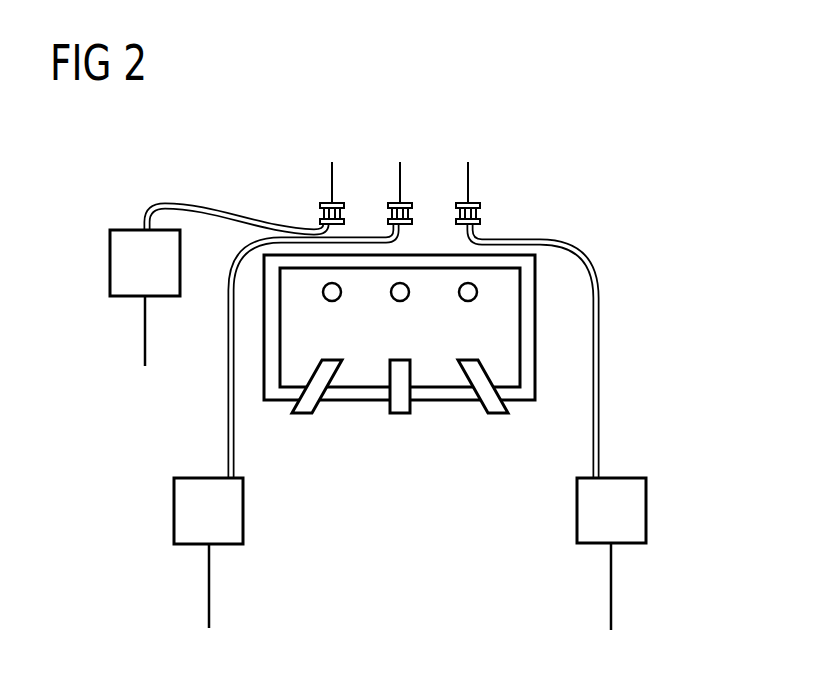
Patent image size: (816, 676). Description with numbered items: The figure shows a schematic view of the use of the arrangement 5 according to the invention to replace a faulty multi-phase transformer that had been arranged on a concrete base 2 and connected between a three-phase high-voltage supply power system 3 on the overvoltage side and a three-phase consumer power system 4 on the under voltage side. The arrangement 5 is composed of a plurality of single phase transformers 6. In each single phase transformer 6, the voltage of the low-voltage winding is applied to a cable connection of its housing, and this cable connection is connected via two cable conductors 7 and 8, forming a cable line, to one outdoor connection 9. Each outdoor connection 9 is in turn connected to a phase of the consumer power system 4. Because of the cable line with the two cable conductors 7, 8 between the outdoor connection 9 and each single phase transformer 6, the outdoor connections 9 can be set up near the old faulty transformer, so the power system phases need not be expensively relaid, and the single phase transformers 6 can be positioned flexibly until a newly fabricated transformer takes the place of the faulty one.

The base 2 is at (445, 400).
The high-voltage supply power system 3 is at (393, 480).
The consumer power system 4 is at (512, 175).
The arrangement 5 is at (377, 341).
The single phase transformer 6 is at (110, 262).
The cable conductor 7 is at (203, 210).
The cable conductor 8 is at (199, 204).
The outdoor connection 9 is at (333, 140).